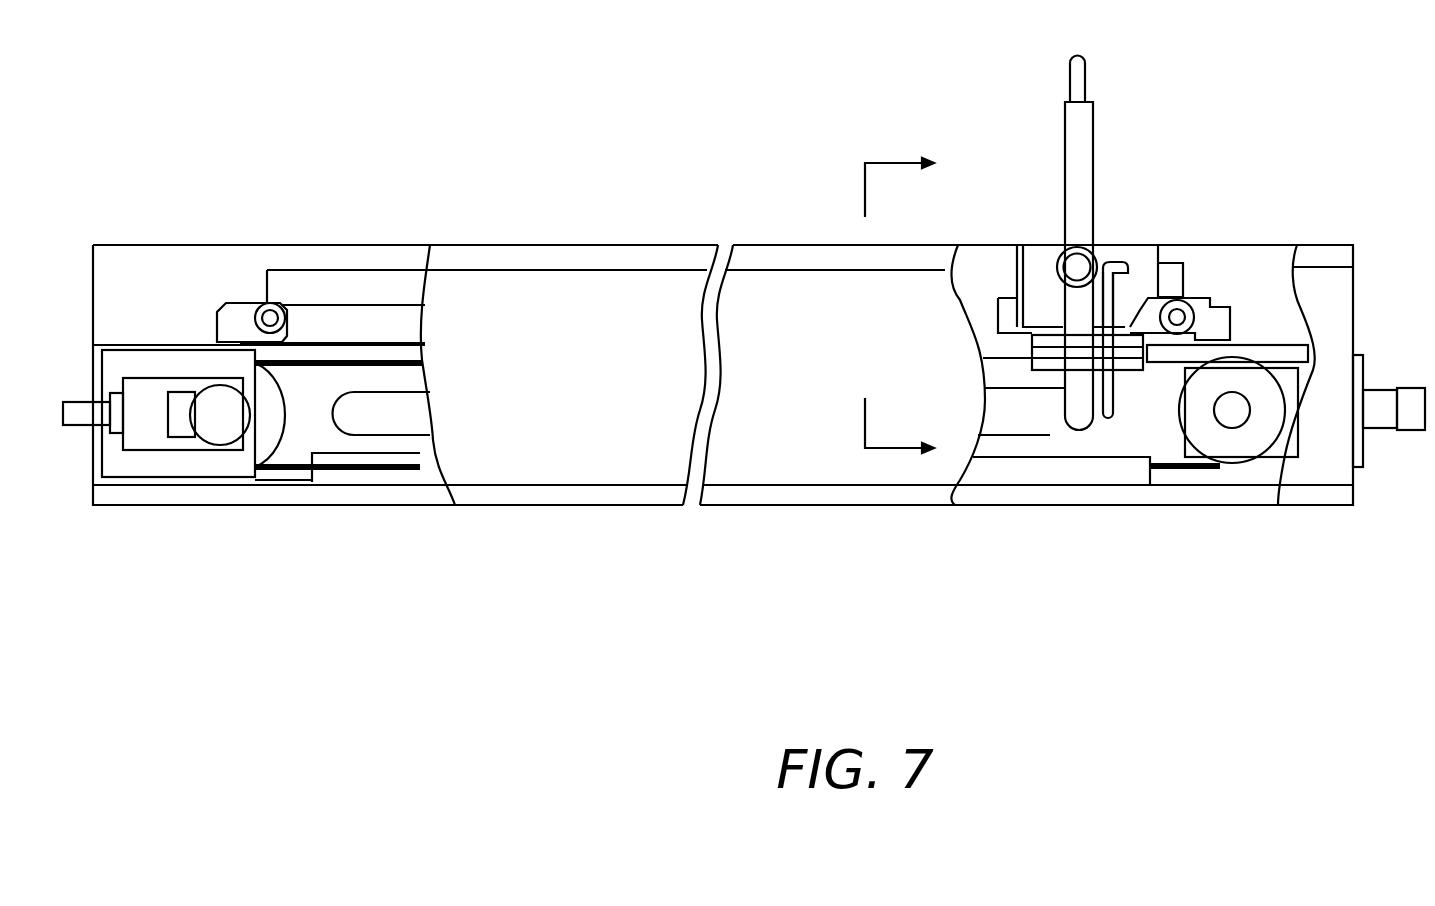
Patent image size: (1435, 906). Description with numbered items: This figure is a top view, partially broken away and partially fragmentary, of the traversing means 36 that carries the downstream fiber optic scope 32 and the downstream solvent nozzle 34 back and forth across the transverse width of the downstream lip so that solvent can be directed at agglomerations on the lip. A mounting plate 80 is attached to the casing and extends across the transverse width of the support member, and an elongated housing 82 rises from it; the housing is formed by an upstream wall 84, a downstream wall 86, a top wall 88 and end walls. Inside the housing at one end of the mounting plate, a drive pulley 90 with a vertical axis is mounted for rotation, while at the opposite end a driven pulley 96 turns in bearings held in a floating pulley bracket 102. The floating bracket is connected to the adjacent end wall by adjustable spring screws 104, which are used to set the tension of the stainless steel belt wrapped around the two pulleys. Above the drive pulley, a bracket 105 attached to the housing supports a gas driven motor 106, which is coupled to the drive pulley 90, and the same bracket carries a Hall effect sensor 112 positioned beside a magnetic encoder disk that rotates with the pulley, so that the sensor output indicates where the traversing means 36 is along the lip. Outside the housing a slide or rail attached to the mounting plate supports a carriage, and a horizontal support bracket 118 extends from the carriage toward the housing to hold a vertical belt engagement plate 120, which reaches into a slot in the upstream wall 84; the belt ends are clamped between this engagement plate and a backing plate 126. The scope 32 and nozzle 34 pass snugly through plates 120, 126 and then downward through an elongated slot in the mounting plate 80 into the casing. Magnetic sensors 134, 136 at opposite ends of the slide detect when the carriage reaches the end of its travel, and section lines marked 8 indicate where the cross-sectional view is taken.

The section line 8- 8 is at (899, 305).
The downstream fiber optic scope 32 is at (1073, 132).
The downstream solvent nozzle 34 is at (1085, 68).
The traversing means 36 is at (1180, 233).
The mounting plate 80 is at (297, 445).
The elongated housing 82 is at (511, 508).
The upstream wall 84 is at (350, 355).
The downstream wall 86 is at (323, 493).
The top wall 88 is at (368, 443).
The drive pulley 90 is at (262, 368).
The driven pulley 96 is at (1260, 437).
The floating pulley bracket 102 is at (1312, 367).
The adjustable spring screws 104 is at (1407, 427).
The bracket 105 is at (142, 428).
The gas driven motor 106 is at (203, 432).
The Hall effect sensor 112 is at (80, 402).
The horizontal support bracket 118 is at (1130, 268).
The belt engagement plate 120 is at (1128, 343).
The backing plate 126 is at (1127, 370).
The magnetic sensor 134 is at (262, 308).
The magnetic sensor 136 is at (1205, 310).